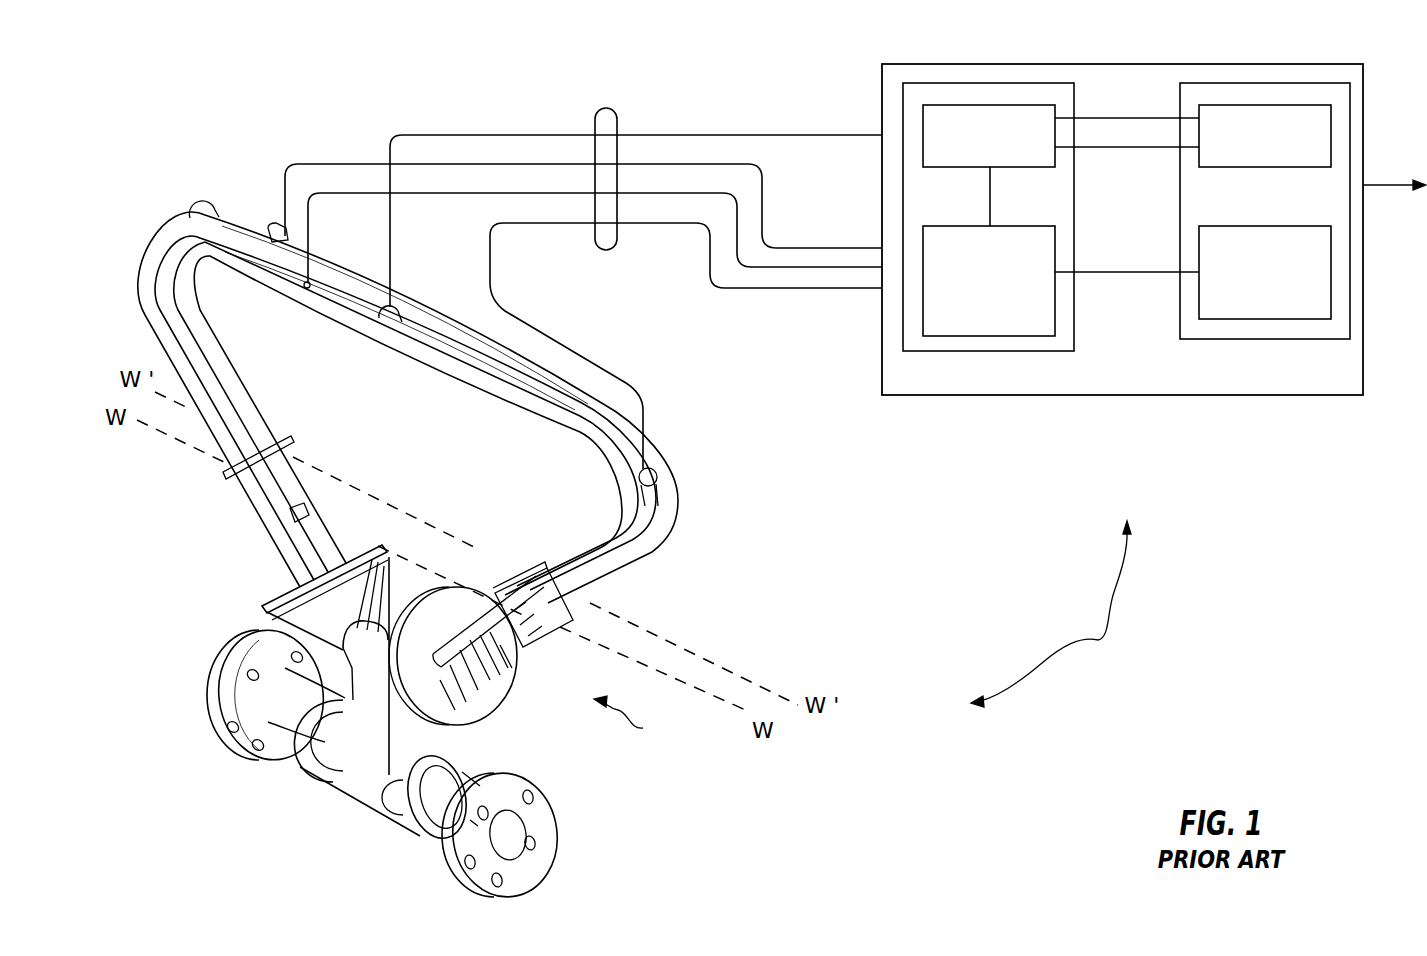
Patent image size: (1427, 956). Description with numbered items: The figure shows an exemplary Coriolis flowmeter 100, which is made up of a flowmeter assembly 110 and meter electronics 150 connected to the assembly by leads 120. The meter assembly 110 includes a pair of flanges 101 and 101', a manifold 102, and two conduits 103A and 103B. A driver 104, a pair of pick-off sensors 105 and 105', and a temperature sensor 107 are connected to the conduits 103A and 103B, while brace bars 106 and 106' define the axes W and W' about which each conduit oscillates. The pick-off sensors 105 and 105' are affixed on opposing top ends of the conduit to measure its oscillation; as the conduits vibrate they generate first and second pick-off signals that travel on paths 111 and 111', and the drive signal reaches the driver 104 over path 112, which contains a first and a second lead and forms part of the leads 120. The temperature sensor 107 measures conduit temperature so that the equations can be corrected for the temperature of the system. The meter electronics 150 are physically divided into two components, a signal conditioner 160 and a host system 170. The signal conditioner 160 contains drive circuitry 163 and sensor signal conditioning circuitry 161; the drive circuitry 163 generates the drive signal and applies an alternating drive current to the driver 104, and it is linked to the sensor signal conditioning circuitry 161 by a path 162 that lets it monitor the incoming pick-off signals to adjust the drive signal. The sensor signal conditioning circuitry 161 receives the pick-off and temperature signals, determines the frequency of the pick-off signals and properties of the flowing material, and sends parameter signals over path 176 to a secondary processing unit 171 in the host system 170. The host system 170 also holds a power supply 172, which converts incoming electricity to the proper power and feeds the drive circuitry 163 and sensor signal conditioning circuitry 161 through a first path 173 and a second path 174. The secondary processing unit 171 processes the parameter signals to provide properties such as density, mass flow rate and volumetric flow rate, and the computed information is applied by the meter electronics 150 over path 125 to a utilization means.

The Coriolis flowmeter 100 is at (1055, 614).
The flange 101 is at (219, 694).
The flange 101' is at (533, 834).
The manifold 102 is at (363, 723).
The conduit 103A is at (340, 307).
The conduit 103B is at (480, 352).
The driver 104 is at (368, 300).
The pick-off sensor 105 is at (186, 180).
The pick-off sensor 105' is at (706, 485).
The brace bar 106 is at (233, 479).
The brace bar 106' is at (545, 577).
The temperature sensor 107 is at (304, 288).
The flowmeter assembly 110 is at (639, 719).
The path 111 is at (575, 206).
The path 111' is at (686, 346).
The path 112 is at (686, 132).
The leads 120 is at (599, 114).
The path 125 is at (1402, 183).
The meter electronics 150 is at (882, 93).
The signal conditioner 160 is at (1007, 351).
The sensor signal conditioning circuitry 161 is at (1057, 230).
The path 162 is at (992, 182).
The drive circuitry 163 is at (963, 168).
The host system 170 is at (1272, 340).
The secondary processing unit 171 is at (1270, 226).
The power supply 172 is at (1251, 168).
The first path 173 is at (1137, 116).
The second path 174 is at (1128, 148).
The path 176 is at (1122, 273).